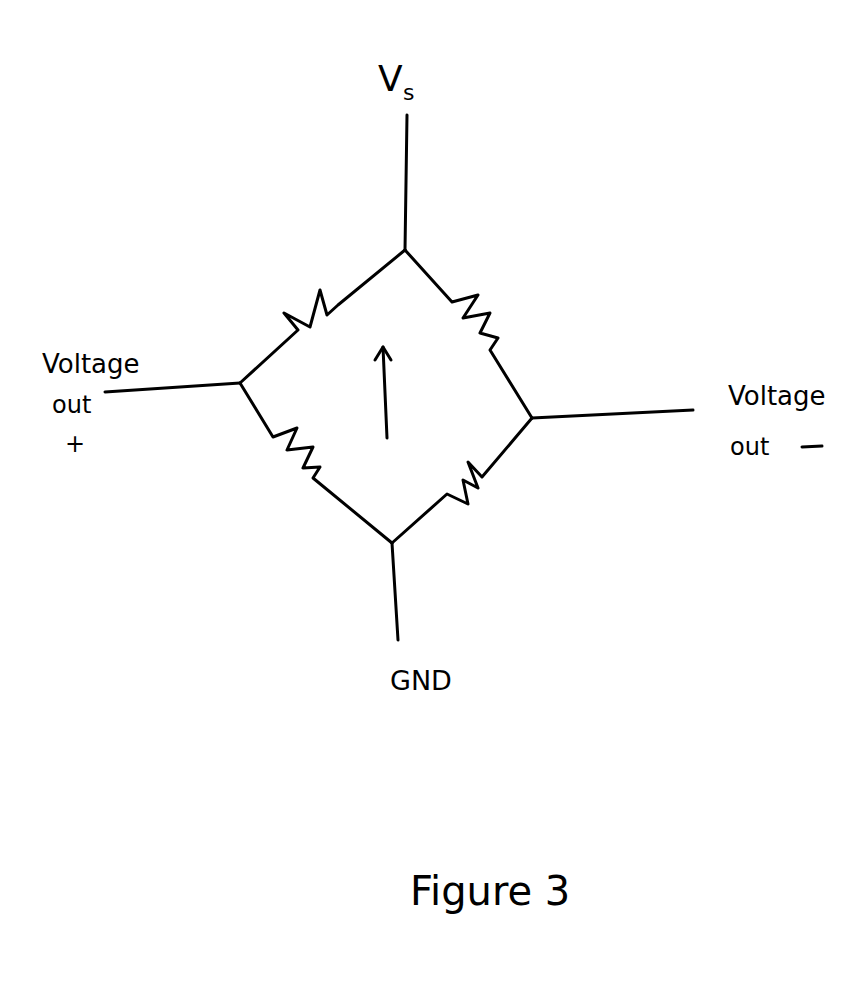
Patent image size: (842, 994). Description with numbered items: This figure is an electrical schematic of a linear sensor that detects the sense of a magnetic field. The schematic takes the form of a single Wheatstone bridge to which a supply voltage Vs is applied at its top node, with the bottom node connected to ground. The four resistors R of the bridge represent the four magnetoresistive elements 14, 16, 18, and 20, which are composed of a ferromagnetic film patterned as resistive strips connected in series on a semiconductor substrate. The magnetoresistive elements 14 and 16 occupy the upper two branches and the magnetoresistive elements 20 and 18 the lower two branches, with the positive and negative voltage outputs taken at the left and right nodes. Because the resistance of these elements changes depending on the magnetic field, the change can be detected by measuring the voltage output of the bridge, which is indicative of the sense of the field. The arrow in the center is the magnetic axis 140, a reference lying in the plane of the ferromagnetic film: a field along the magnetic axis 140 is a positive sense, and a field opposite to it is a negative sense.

The magnetoresistive element 14 is at (322, 316).
The magnetoresistive element 16 is at (471, 334).
The magnetoresistive element 18 is at (462, 484).
The magnetoresistive element 20 is at (316, 463).
The magnetic axis 140 is at (405, 392).